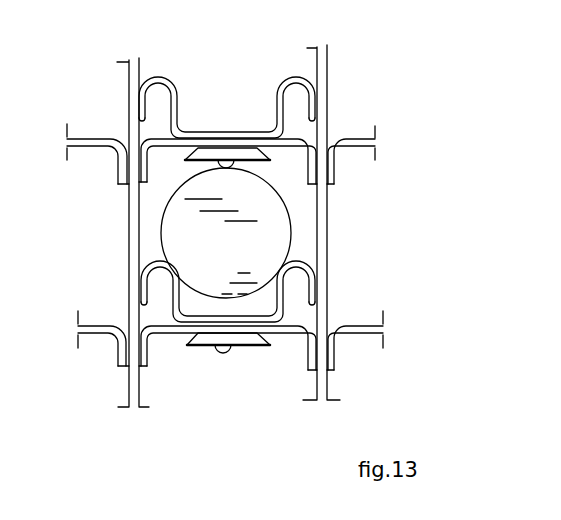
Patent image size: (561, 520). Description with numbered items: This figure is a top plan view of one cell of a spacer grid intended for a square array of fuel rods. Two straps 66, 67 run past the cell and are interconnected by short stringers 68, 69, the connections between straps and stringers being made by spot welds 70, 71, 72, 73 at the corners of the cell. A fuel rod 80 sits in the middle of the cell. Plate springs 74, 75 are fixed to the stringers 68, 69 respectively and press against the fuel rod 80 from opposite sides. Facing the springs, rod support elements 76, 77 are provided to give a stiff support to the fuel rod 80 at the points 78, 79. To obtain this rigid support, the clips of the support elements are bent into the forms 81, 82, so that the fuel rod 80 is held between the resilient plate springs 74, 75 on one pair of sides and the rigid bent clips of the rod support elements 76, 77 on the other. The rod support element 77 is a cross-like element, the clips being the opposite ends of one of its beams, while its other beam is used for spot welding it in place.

The strap 66 is at (328, 58).
The strap 67 is at (126, 82).
The stringer 68 is at (168, 152).
The stringer 69 is at (168, 331).
The spot weld 70 is at (139, 187).
The spot weld 71 is at (332, 168).
The spot weld 72 is at (140, 366).
The spot weld 73 is at (312, 364).
The plate spring 74 is at (252, 165).
The plate spring 75 is at (262, 350).
The rod support element 76 is at (180, 133).
The rod support element 77 is at (181, 313).
The support point 78 is at (173, 272).
The support point 79 is at (286, 266).
The fuel rod 80 is at (293, 231).
The bent clip form 81 is at (318, 263).
The bent clip form 82 is at (142, 270).